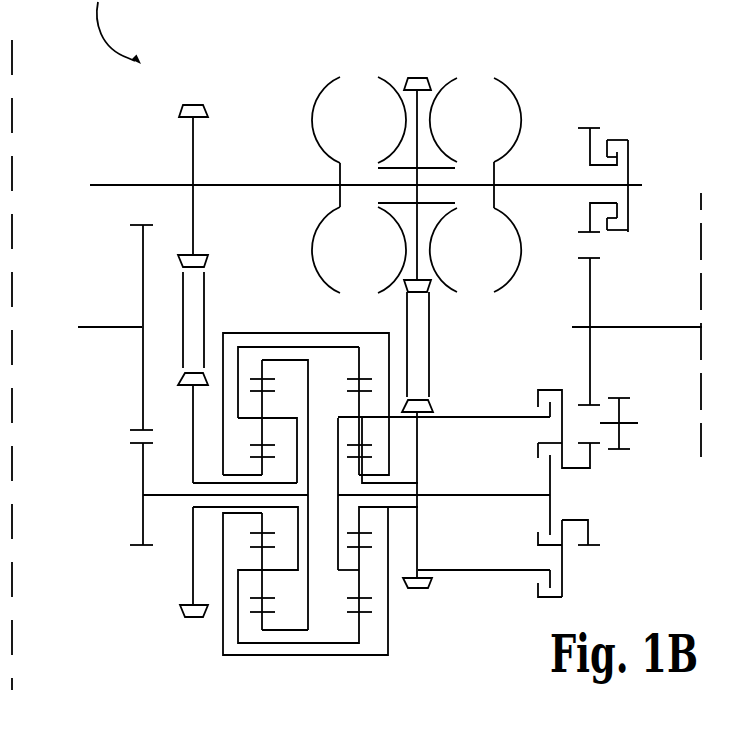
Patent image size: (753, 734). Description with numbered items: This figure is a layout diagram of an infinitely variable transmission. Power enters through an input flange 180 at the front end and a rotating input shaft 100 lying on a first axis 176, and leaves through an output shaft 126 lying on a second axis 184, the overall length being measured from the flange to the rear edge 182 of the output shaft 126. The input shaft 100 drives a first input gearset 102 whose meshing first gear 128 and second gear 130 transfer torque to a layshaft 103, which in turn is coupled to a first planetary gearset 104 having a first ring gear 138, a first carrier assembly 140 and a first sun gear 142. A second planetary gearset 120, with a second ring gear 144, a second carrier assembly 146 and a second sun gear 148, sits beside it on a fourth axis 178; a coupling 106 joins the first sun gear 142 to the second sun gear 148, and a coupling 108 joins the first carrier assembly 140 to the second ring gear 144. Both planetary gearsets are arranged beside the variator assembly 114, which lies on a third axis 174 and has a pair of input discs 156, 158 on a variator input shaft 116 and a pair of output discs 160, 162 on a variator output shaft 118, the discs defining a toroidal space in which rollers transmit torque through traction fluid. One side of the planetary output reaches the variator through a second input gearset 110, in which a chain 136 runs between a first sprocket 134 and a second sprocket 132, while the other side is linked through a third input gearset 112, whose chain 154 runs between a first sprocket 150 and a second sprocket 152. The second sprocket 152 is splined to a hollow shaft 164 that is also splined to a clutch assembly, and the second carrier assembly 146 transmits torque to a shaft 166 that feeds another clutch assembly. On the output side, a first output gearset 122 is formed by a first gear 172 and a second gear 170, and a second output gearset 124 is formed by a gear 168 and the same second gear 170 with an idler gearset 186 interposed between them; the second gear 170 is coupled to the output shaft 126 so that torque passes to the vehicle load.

The input shaft 100 is at (103, 325).
The first input gearset 102 is at (131, 562).
The layshaft 103 is at (160, 495).
The first planetary gearset 104 is at (256, 670).
The coupling 106 is at (302, 332).
The coupling 108 is at (272, 345).
The second input gearset 110 is at (179, 633).
The third input gearset 112 is at (419, 612).
The variator assembly 114 is at (419, 160).
The variator input shaft 116 is at (242, 185).
The variator output shaft 118 is at (447, 203).
The second planetary gearset 120 is at (356, 676).
The first output gearset 122 is at (591, 130).
The second output gearset 124 is at (597, 565).
The output shaft 126 is at (648, 328).
The first gear 128 is at (142, 395).
The second gear 130 is at (142, 533).
The second sprocket 132 is at (193, 212).
The first sprocket 134 is at (192, 560).
The chain 136 is at (222, 302).
The first ring gear 138 is at (308, 387).
The first carrier assembly 140 is at (278, 417).
The first sun gear 142 is at (262, 465).
The second ring gear 144 is at (360, 360).
The second carrier assembly 146 is at (360, 407).
The second sun gear 148 is at (362, 475).
The first sprocket 150 is at (410, 252).
The second sprocket 152 is at (418, 533).
The chain 154 is at (446, 333).
The input disc 156 is at (312, 110).
The input disc 158 is at (522, 108).
The output disc 160 is at (397, 116).
The output disc 162 is at (432, 116).
The shaft 164 is at (482, 417).
The shaft 166 is at (492, 493).
The gear 168 is at (590, 530).
The second gear 170 is at (590, 293).
The first gear 172 is at (590, 218).
The third axis 174 is at (68, 185).
The first axis 176 is at (53, 327).
The fourth axis 178 is at (111, 494).
The input flange 180 is at (12, 97).
The rear edge 182 is at (702, 253).
The second axis 184 is at (719, 327).
The idler gearset 186 is at (620, 413).